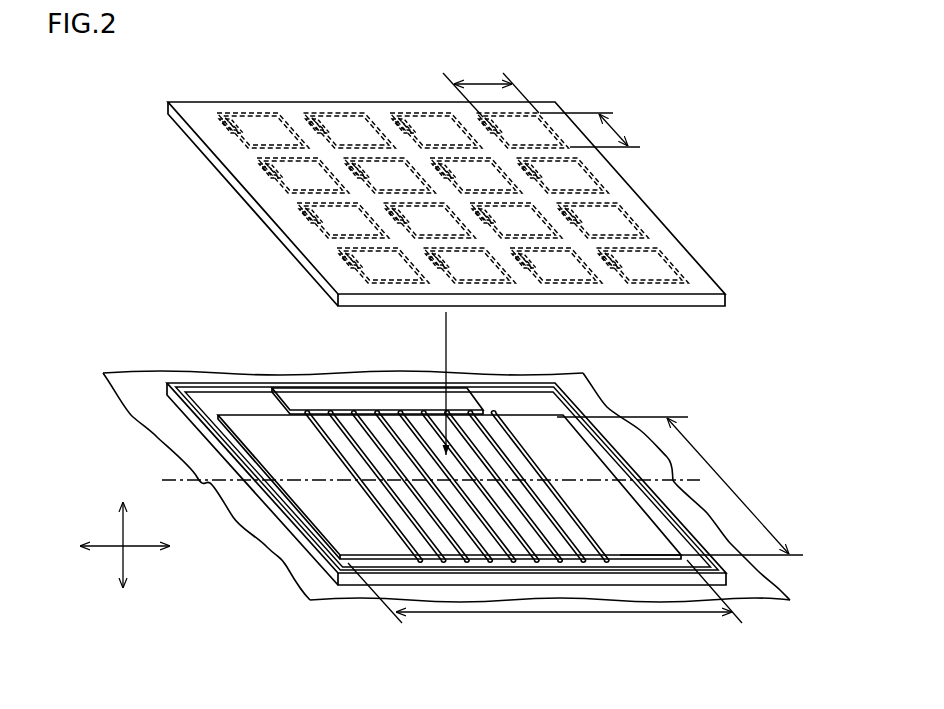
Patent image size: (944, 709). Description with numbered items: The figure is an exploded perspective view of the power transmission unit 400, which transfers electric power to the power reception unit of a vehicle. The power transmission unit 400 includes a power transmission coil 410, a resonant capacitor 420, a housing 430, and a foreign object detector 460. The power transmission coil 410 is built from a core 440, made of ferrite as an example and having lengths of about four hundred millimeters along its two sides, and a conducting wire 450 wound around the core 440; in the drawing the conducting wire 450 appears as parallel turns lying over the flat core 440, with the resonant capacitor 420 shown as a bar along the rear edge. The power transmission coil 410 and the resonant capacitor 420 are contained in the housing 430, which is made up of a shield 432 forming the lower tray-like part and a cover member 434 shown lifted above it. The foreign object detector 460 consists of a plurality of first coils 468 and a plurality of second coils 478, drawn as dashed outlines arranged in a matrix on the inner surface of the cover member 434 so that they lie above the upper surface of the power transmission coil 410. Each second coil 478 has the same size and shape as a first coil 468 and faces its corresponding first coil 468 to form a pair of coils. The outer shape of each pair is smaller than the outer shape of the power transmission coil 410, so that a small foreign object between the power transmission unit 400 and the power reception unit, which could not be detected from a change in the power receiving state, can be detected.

The power transmission unit 400 is at (136, 136).
The power transmission coil 410 is at (383, 341).
The resonant capacitor 420 is at (422, 400).
The housing 430 is at (774, 340).
The shield 432 is at (583, 445).
The cover member 434 is at (617, 300).
The core 440 is at (316, 457).
The conducting wire 450 is at (377, 461).
The foreign object detector 460 is at (652, 188).
The first coils 468 is at (307, 226).
The second coils 478 is at (421, 193).